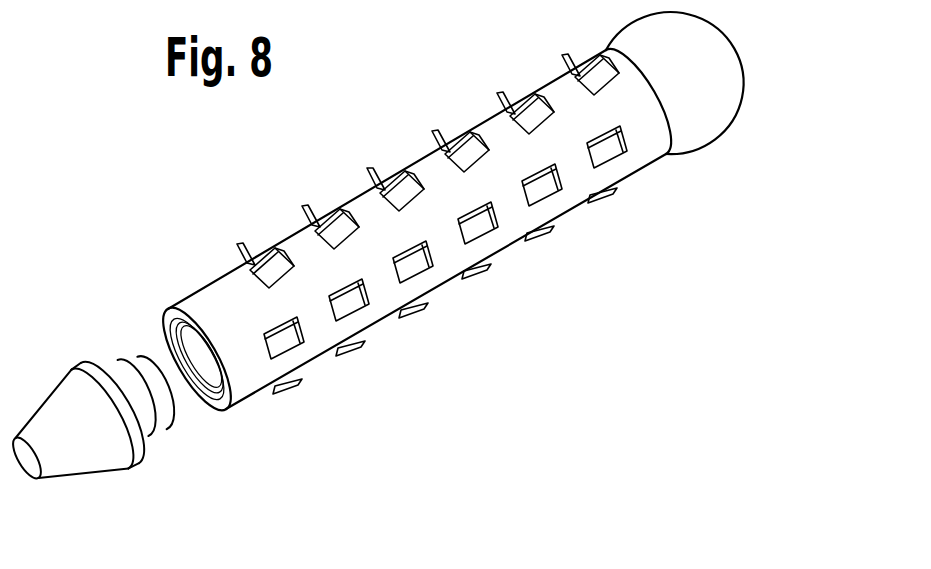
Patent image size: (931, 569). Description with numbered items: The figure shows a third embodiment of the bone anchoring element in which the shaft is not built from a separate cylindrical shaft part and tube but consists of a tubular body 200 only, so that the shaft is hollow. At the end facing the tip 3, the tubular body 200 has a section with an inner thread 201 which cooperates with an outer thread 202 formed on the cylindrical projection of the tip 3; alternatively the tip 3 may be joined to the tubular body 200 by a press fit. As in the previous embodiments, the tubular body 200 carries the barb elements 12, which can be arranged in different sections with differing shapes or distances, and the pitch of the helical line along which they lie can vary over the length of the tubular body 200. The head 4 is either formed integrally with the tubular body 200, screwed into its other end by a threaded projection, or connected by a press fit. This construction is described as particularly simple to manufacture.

The tubular body 200 is at (419, 158).
The inner thread 201 is at (173, 347).
The outer thread 202 is at (121, 362).
The barb elements 12 is at (337, 214).
The tip 3 is at (70, 458).
The head 4 is at (725, 88).